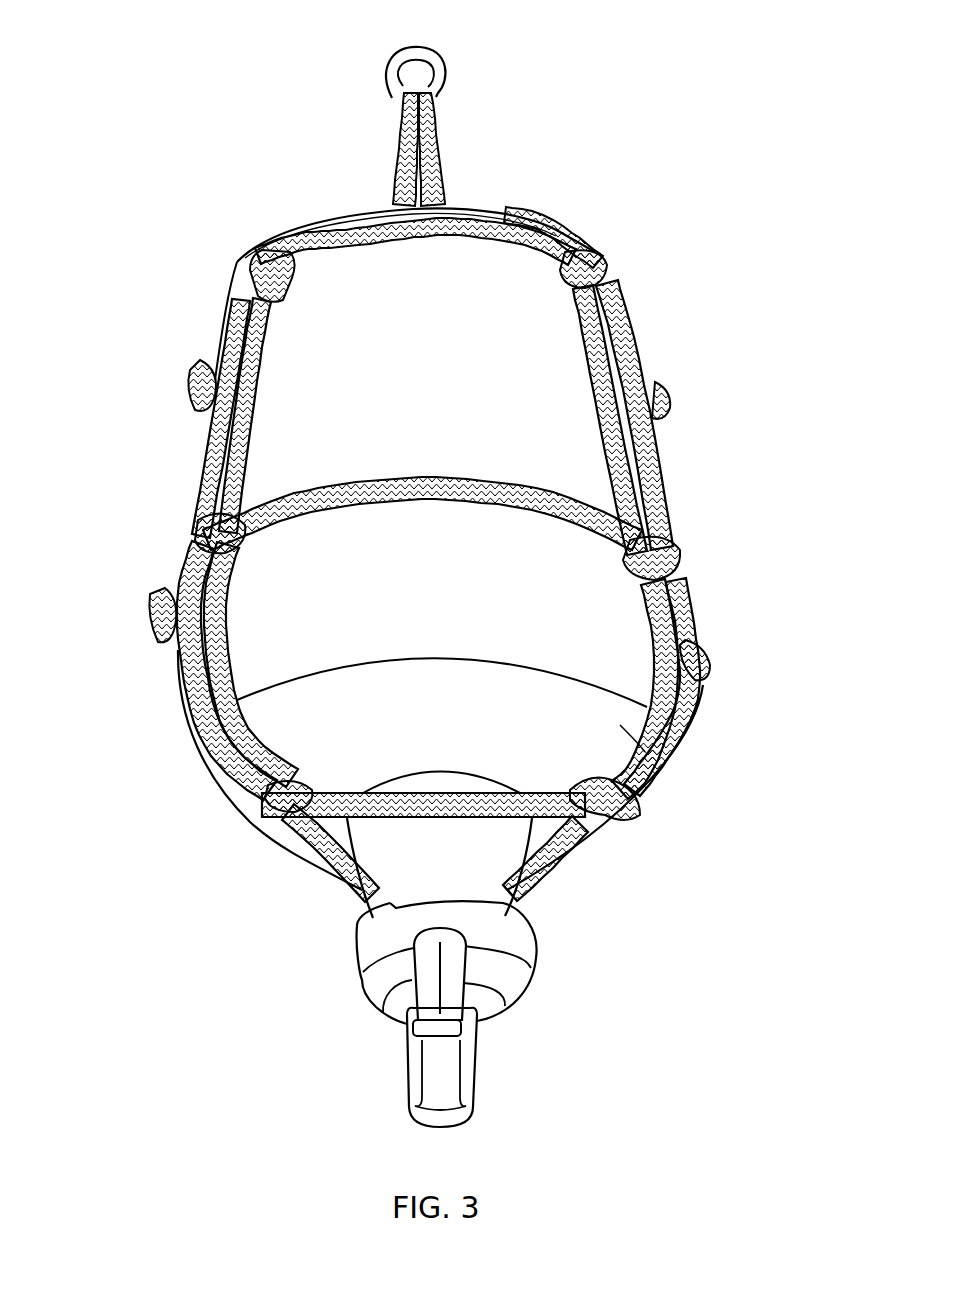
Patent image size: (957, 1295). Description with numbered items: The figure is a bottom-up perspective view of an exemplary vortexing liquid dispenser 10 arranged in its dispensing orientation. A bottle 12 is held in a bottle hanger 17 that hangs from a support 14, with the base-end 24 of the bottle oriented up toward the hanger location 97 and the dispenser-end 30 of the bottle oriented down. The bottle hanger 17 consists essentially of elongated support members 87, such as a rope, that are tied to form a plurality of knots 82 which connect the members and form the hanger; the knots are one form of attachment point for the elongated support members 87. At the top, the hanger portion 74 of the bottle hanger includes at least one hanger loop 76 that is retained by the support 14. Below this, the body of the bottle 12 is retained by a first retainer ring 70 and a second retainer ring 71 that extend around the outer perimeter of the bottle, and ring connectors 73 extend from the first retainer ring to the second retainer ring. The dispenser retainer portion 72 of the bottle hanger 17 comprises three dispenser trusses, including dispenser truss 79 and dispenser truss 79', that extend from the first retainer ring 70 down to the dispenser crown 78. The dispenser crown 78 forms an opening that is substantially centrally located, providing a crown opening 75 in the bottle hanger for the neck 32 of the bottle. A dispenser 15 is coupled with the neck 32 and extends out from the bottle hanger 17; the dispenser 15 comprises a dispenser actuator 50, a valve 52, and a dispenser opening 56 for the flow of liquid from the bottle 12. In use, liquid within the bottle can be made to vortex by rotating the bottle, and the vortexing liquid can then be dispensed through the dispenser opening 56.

The vortexing liquid dispenser 10 is at (652, 265).
The bottle 12 is at (570, 450).
The support 14 is at (390, 66).
The dispenser 15 is at (393, 1020).
The bottle hanger 17 is at (633, 352).
The base-end 24 is at (470, 221).
The dispenser-end 30 is at (657, 787).
The neck 32 is at (383, 893).
The dispenser actuator 50 is at (420, 950).
The valve 52 is at (462, 1006).
The dispenser opening 56 is at (440, 1060).
The first retainer ring 70 is at (430, 256).
The second retainer ring 71 is at (400, 479).
The dispenser retainer portion 72 is at (693, 735).
The ring connectors 73 is at (200, 475).
The hanger portion 74 is at (443, 172).
The crown opening 75 is at (502, 887).
The hanger loop 76 is at (398, 142).
The dispenser crown 78 is at (577, 843).
The dispenser truss 79 is at (204, 670).
The dispenser truss 79' is at (708, 689).
The knots 82 is at (200, 376).
The elongated support members 87 is at (560, 230).
The hanger location 97 is at (450, 74).